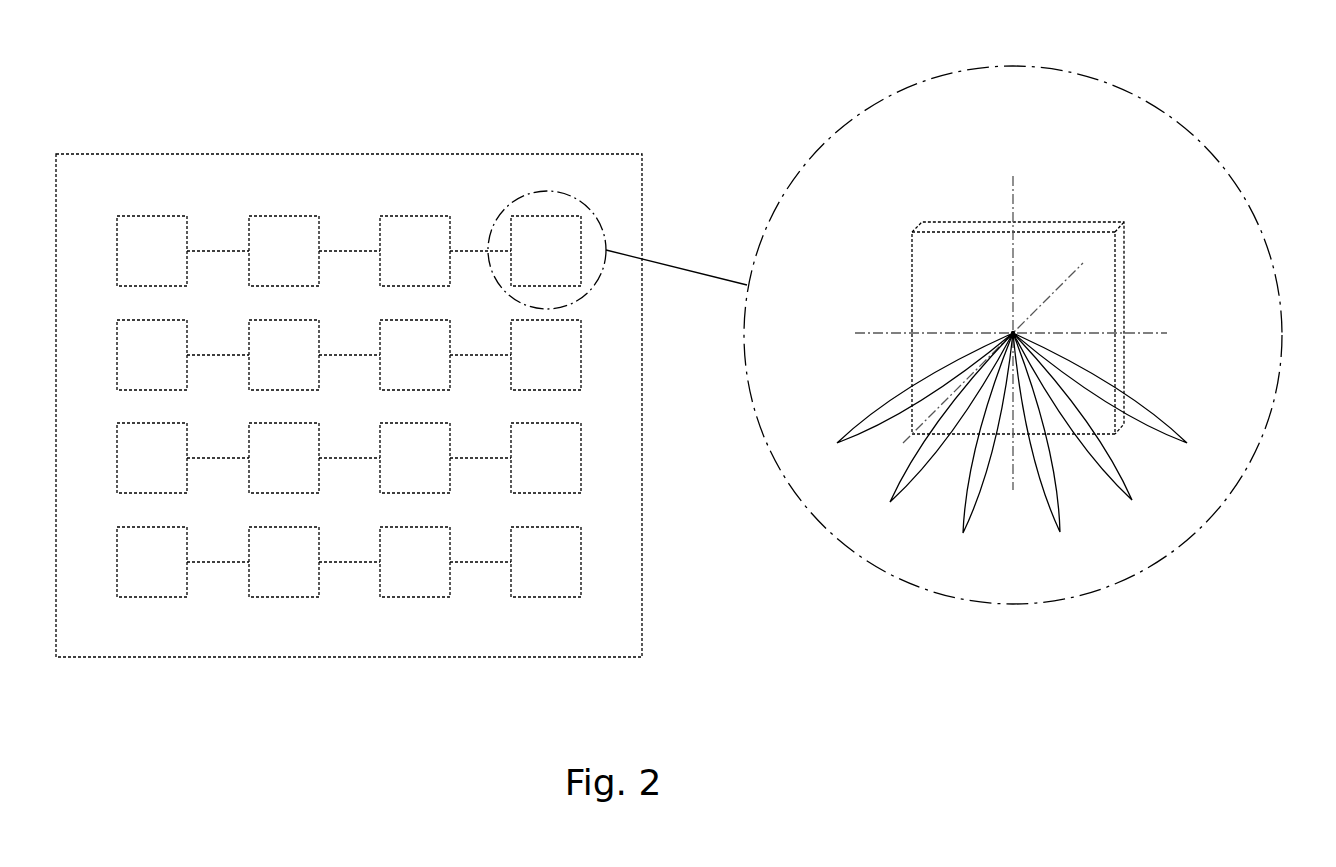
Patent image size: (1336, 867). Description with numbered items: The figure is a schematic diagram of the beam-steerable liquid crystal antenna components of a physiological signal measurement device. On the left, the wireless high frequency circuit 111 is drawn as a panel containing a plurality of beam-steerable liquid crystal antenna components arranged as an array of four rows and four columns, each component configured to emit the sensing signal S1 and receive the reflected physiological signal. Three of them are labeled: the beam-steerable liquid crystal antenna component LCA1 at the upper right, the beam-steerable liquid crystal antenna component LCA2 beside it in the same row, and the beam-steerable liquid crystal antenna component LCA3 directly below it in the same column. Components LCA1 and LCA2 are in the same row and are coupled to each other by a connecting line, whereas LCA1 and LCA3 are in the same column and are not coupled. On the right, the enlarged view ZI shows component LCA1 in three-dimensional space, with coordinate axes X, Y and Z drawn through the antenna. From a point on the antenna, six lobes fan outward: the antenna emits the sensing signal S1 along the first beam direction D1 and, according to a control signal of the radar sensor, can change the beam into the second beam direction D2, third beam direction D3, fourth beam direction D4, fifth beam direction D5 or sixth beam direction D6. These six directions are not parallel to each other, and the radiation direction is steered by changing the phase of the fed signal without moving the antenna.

The wireless high frequency circuit 111 is at (147, 154).
The beam-steerable liquid crystal antenna component LCA1 is at (545, 216).
The beam-steerable liquid crystal antenna component LCA2 is at (416, 216).
The beam-steerable liquid crystal antenna component LCA3 is at (581, 352).
The enlarged view ZI is at (1145, 88).
The sensing signal S1 is at (995, 319).
The first beam direction D1 is at (906, 402).
The second beam direction D2 is at (936, 433).
The third beam direction D3 is at (979, 450).
The fourth beam direction D4 is at (1050, 449).
The fifth beam direction D5 is at (1090, 431).
The sixth beam direction D6 is at (1119, 398).
The X-axis X is at (1020, 337).
The Y-axis Y is at (1009, 317).
The Z-axis Z is at (1001, 340).